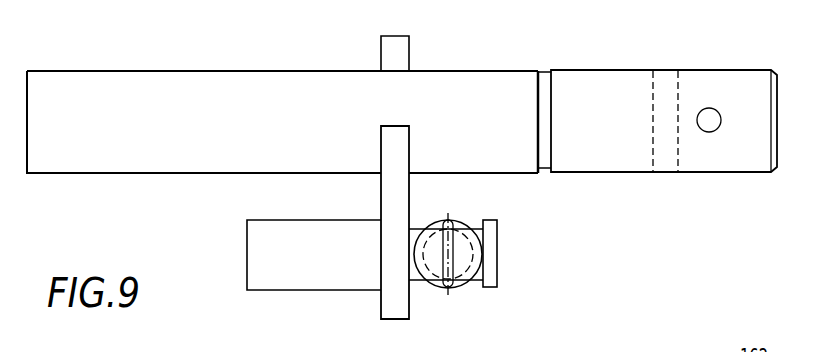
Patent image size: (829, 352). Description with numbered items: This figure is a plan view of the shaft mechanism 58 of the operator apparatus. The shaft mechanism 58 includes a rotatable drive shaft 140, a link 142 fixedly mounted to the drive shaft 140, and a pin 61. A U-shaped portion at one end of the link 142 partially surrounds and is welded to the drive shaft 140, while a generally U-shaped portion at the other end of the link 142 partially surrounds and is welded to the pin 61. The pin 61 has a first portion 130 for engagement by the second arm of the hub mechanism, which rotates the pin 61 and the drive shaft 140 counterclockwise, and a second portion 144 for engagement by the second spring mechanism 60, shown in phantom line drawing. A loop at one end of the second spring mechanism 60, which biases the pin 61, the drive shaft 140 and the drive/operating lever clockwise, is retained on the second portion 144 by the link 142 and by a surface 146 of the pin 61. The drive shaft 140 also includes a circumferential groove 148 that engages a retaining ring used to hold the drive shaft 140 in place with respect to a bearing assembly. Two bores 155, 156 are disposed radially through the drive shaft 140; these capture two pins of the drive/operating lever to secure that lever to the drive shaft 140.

The rotatable drive shaft 140 is at (171, 71).
The link 142 is at (381, 46).
The circumferential groove 148 is at (548, 62).
The bore 155 is at (657, 126).
The bore 156 is at (712, 131).
The second portion of the pin 144 is at (476, 224).
The first portion of the pin 130 is at (265, 292).
The shaft mechanism 58 is at (226, 263).
The pin 61 is at (509, 232).
The surface of the pin 146 is at (497, 277).
The second spring mechanism 60 is at (432, 288).